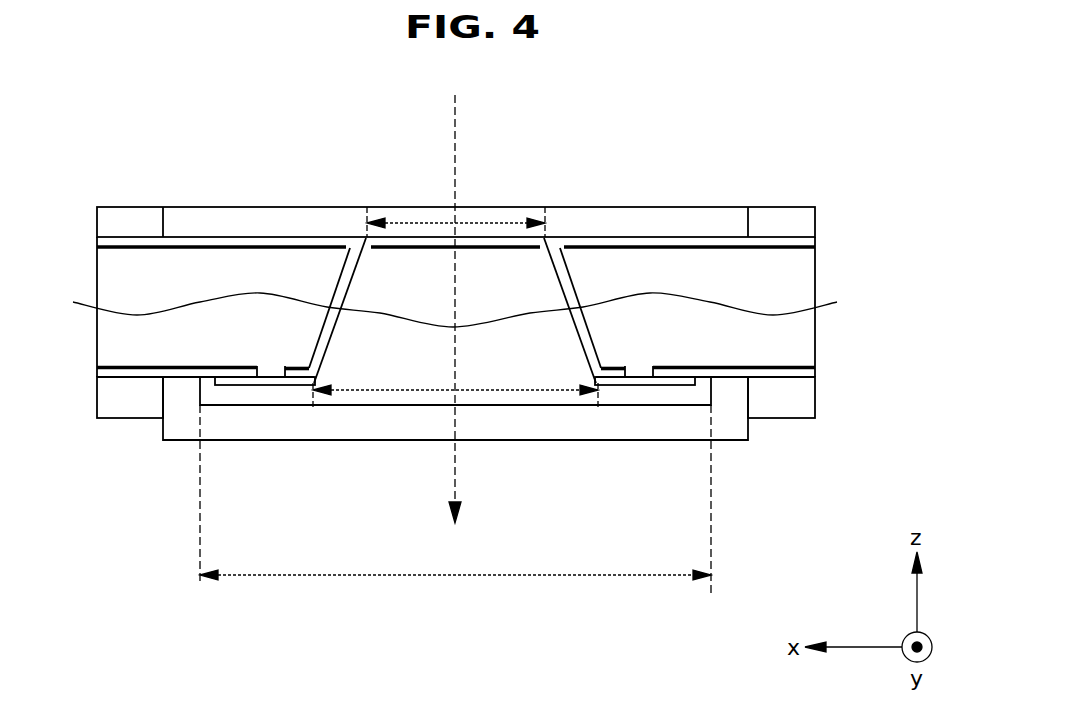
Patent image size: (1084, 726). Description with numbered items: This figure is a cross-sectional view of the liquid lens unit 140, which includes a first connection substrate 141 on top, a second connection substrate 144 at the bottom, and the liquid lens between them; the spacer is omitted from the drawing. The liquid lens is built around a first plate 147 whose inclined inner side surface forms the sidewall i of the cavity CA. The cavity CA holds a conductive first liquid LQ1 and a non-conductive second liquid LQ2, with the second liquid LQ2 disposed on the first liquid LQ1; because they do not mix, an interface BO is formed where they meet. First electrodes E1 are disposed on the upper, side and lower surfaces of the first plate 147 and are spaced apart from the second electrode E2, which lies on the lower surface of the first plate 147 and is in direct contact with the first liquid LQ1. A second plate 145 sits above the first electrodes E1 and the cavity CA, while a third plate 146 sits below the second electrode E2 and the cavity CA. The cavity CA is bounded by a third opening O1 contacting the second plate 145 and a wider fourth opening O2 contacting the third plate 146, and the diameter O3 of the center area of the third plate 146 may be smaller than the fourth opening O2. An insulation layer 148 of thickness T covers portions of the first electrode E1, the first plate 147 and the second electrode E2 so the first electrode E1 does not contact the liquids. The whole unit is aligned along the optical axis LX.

The liquid lens unit 140 is at (825, 99).
The first connection substrate 141 is at (800, 218).
The second connection substrate 144 is at (800, 403).
The second plate 145 is at (667, 218).
The third plate 146 is at (735, 408).
The first plate 147 is at (800, 333).
The insulation layer 148 is at (630, 386).
The first electrode E1 is at (800, 246).
The second electrode E2 is at (800, 370).
The first liquid LQ1 is at (511, 377).
The second liquid LQ2 is at (402, 277).
The cavity CA is at (492, 262).
The interface BO is at (384, 319).
The thickness of the insulation layer T is at (325, 273).
The sidewall i is at (456, 306).
The optical axis LX is at (454, 328).
The third opening O1 is at (456, 215).
The fourth opening O2 is at (455, 385).
The diameter of the center area of the third plate O3 is at (455, 505).